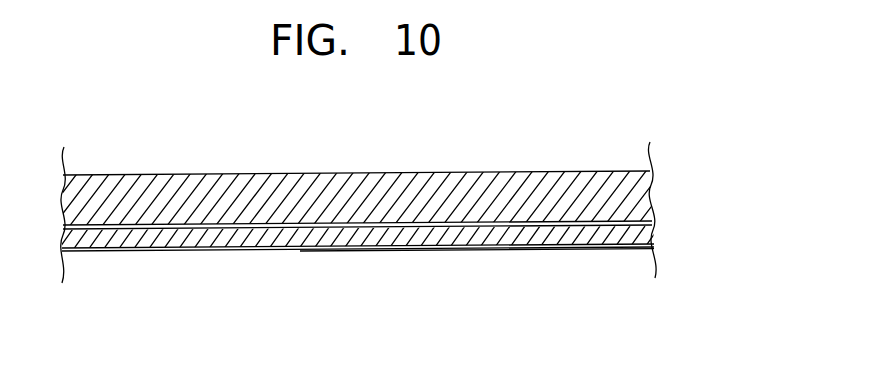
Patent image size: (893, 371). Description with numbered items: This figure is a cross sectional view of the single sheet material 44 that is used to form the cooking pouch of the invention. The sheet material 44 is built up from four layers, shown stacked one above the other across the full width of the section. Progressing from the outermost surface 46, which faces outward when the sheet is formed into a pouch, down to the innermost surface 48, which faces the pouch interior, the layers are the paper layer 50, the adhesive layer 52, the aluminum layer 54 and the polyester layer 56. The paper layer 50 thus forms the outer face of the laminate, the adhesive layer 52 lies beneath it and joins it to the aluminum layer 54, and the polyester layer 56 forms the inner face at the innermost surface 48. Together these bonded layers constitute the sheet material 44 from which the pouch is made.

The sheet material 44 is at (632, 124).
The outermost surface 46 is at (350, 172).
The innermost surface 48 is at (520, 247).
The paper layer 50 is at (443, 194).
The adhesive layer 52 is at (592, 230).
The aluminum layer 54 is at (103, 238).
The polyester layer 56 is at (165, 252).